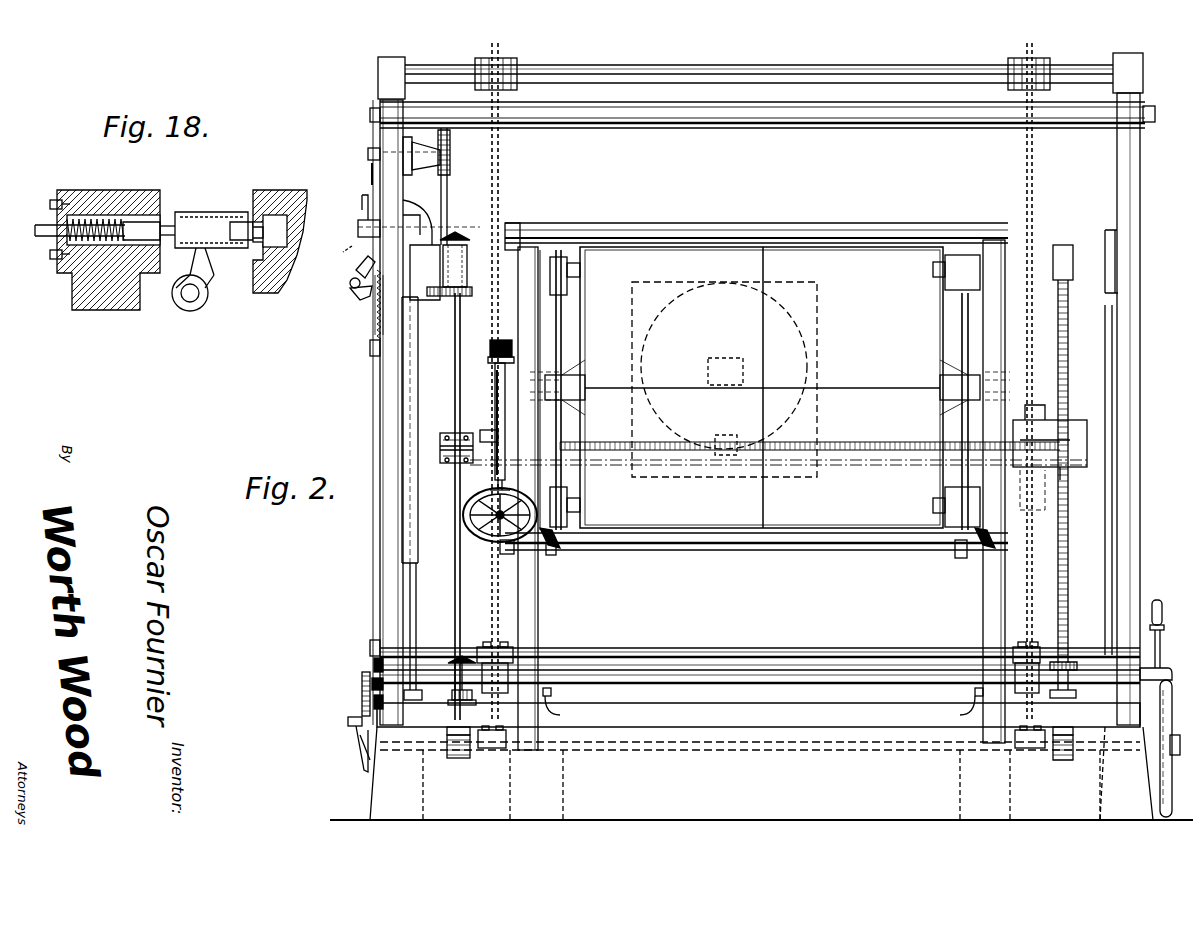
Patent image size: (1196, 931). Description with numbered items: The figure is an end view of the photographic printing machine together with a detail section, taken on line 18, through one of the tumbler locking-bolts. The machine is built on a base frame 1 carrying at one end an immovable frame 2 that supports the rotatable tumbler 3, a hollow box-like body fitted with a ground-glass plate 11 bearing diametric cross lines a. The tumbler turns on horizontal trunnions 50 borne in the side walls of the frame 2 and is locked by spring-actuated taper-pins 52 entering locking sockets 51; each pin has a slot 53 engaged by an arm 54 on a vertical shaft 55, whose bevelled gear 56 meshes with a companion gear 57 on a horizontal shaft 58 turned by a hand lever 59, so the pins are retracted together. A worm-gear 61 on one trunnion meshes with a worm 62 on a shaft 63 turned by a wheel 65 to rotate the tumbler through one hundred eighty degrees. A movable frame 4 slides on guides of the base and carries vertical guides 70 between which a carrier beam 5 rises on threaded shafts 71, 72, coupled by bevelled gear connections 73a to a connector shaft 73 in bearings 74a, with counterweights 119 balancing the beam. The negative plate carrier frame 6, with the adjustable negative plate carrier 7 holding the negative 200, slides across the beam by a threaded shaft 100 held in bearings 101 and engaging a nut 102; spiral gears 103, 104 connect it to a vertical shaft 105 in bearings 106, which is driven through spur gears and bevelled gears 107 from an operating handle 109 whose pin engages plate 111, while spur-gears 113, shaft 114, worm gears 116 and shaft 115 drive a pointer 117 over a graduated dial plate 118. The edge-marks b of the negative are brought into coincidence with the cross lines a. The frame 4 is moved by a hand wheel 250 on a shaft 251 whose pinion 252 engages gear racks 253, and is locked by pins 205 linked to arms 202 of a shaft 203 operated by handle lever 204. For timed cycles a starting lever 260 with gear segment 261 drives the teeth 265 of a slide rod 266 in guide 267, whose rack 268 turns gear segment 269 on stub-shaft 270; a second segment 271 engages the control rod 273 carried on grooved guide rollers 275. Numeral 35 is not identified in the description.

In FIG. 2, the base frame 1 is at (761, 773).
In FIG. 18, the frame 2 is at (104, 306).
In FIG. 2, the frame 2 is at (798, 232).
In FIG. 18, the tumbler 3 is at (290, 202).
In FIG. 2, the tumbler 3 is at (849, 244).
In FIG. 2, the movable frame 4 is at (788, 128).
In FIG. 2, the carrier beam 5 is at (579, 477).
In FIG. 2, the negative plate carrier frame 6 is at (812, 420).
In FIG. 2, the negative plate carrier 7 is at (804, 352).
In FIG. 2, the ground-glass plate 11 is at (684, 242).
In FIG. 2, the section line 18 is at (487, 271).
In FIG. 2, the guide rod 35 is at (965, 330).
In FIG. 2, the trunnions 50 is at (528, 372).
In FIG. 18, the locking sockets 51 is at (270, 240).
In FIG. 18, the taper-pins 52 is at (240, 244).
In FIG. 2, the taper-pins 52 is at (765, 384).
In FIG. 18, the slots 53 is at (218, 222).
In FIG. 18, the arms 54 is at (200, 262).
In FIG. 18, the vertical parallel shafts 55 is at (190, 294).
In FIG. 2, the vertical parallel shafts 55 is at (566, 352).
In FIG. 2, the bevelled gears 56 is at (560, 548).
In FIG. 2, the companion gears 57 is at (546, 552).
In FIG. 2, the horizontal shaft 58 is at (770, 548).
In FIG. 2, the hand lever 59 is at (498, 555).
In FIG. 2, the worm-gear 61 is at (495, 392).
In FIG. 2, the worm 62 is at (492, 346).
In FIG. 2, the shaft 63 is at (505, 485).
In FIG. 2, the wheel 65 is at (468, 508).
In FIG. 2, the vertical guides 70 is at (414, 608).
In FIG. 2, the vertical threaded shaft 71 is at (462, 612).
In FIG. 2, the vertical threaded shaft 72 is at (1058, 578).
In FIG. 2, the connector shaft 73 is at (682, 650).
In FIG. 2, the bevelled gear connection 73a is at (462, 656).
In FIG. 2, the bearings 74a is at (508, 648).
In FIG. 2, the horizontal threaded shaft 100 is at (862, 438).
In FIG. 2, the bearings 101 is at (1072, 423).
In FIG. 2, the nut 102 is at (730, 437).
In FIG. 2, the spiral gear 103 is at (466, 433).
In FIG. 2, the spiral gear 104 is at (440, 433).
In FIG. 2, the vertical shaft 105 is at (455, 364).
In FIG. 2, the bearings 106 is at (458, 278).
In FIG. 2, the bevelled gears 107 is at (452, 236).
In FIG. 2, the operating handle 109 is at (362, 203).
In FIG. 2, the plate 111 is at (372, 248).
In FIG. 2, the spur-gears 113 is at (425, 272).
In FIG. 2, the shaft 114 is at (448, 191).
In FIG. 2, the shaft 115 is at (380, 156).
In FIG. 2, the worm gears 116 is at (450, 152).
In FIG. 2, the pointer 117 is at (372, 122).
In FIG. 2, the graduated dial plate 118 is at (372, 174).
In FIG. 2, the counterweights 119 is at (783, 436).
In FIG. 2, the negative 200 is at (728, 364).
In FIG. 2, the arms 202 is at (551, 692).
In FIG. 2, the shaft 203 is at (422, 496).
In FIG. 2, the handle lever 204 is at (1161, 650).
In FIG. 2, the pins 205 is at (760, 708).
In FIG. 2, the hand wheel 250 is at (1162, 770).
In FIG. 2, the shaft 251 is at (683, 748).
In FIG. 2, the pinion 252 is at (460, 758).
In FIG. 2, the gear racks 253 is at (455, 730).
In FIG. 2, the starting lever 260 is at (356, 272).
In FIG. 2, the gear segment 261 is at (362, 303).
In FIG. 2, the teeth 265 is at (375, 310).
In FIG. 2, the slide rod 266 is at (373, 400).
In FIG. 2, the guide 267 is at (370, 348).
In FIG. 2, the rack 268 is at (374, 664).
In FIG. 2, the gear segment 269 is at (383, 702).
In FIG. 2, the stub-shaft 270 is at (362, 690).
In FIG. 2, the second segment 271 is at (362, 684).
In FIG. 2, the control rod 273 is at (360, 738).
In FIG. 2, the grooved guide rollers 275 is at (339, 725).
In FIG. 2, the cross lines a is at (766, 346).
In FIG. 2, the edge-marks b is at (742, 370).